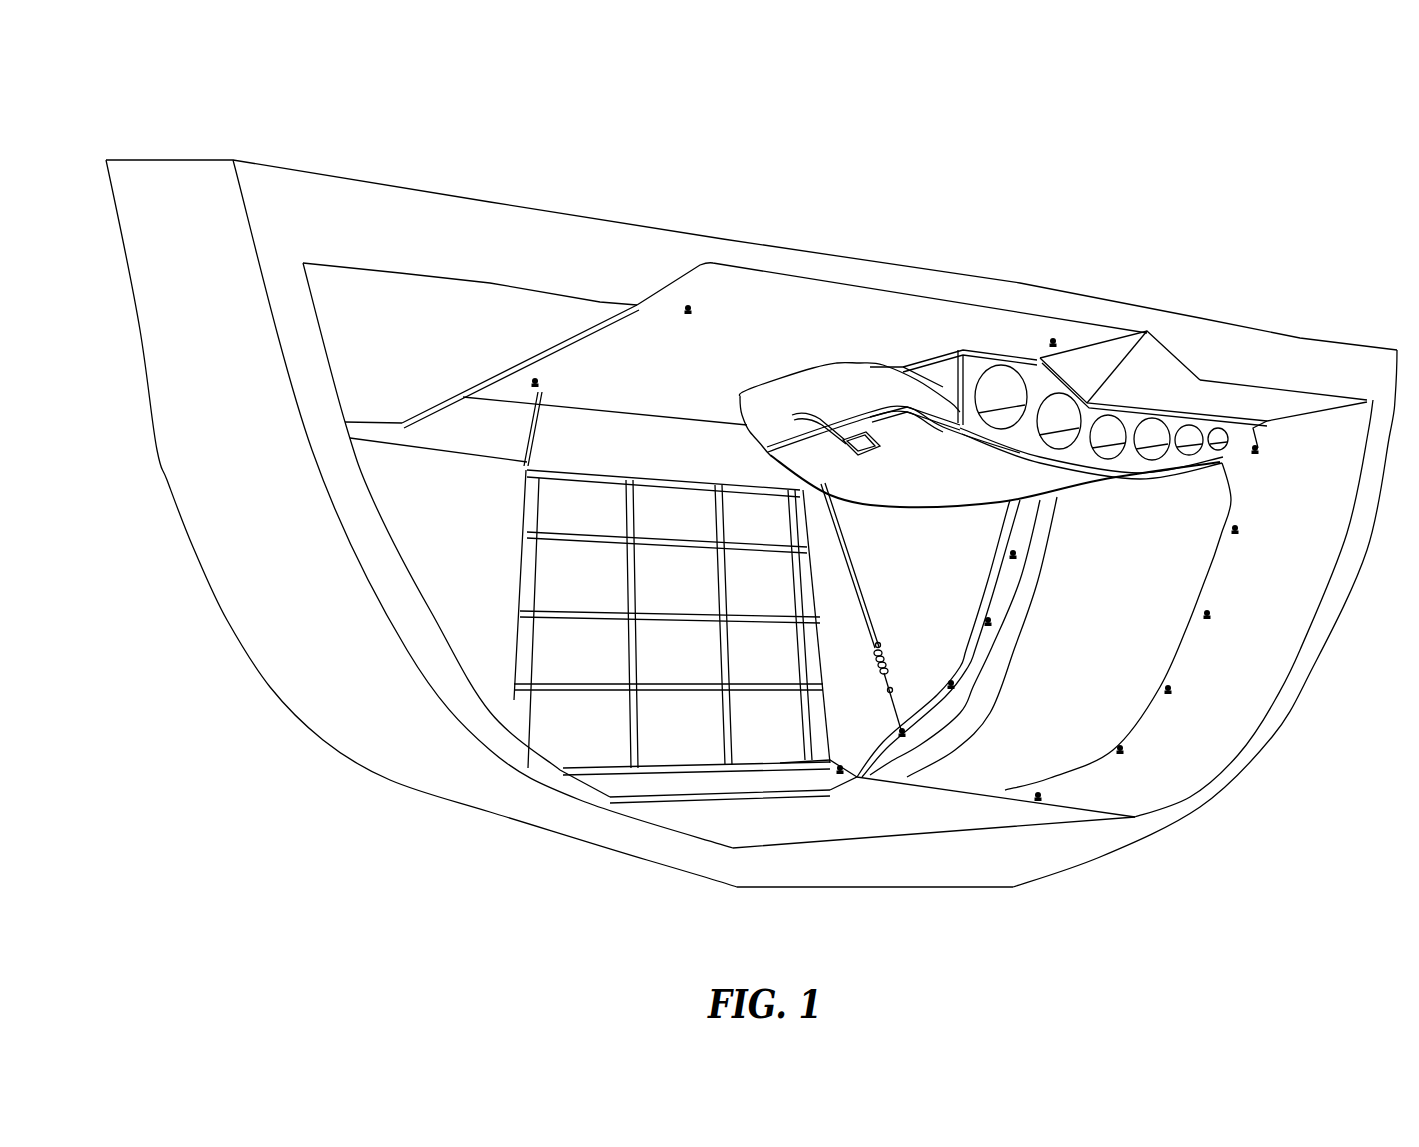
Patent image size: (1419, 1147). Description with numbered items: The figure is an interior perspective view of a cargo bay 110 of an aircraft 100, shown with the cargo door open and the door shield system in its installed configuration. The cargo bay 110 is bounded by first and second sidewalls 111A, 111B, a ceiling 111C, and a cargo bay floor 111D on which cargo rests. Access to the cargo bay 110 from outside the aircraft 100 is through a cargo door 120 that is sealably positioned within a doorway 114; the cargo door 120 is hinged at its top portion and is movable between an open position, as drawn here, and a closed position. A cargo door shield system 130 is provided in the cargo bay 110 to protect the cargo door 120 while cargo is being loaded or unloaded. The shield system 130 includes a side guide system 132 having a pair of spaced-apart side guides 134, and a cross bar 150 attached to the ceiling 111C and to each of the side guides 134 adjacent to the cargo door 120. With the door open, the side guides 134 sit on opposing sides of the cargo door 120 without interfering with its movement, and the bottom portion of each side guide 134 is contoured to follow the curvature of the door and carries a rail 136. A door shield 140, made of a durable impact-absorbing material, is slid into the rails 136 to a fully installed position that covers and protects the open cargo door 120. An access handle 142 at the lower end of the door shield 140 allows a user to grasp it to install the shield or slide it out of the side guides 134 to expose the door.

The aircraft 100 is at (303, 799).
The cargo bay 110 is at (711, 338).
The first sidewall 111A is at (1250, 673).
The second sidewall 111B is at (370, 483).
The ceiling 111C is at (773, 299).
The cargo bay floor 111D is at (728, 827).
The doorway 114 is at (1113, 750).
The cargo door 120 is at (845, 378).
The cargo door shield system 130 is at (1053, 385).
The side guide system 132 is at (1170, 460).
The side guides 134 is at (1132, 422).
The rail 136 is at (767, 468).
The door shield 140 is at (943, 453).
The access handle 142 is at (867, 447).
The cross bar 150 is at (910, 357).